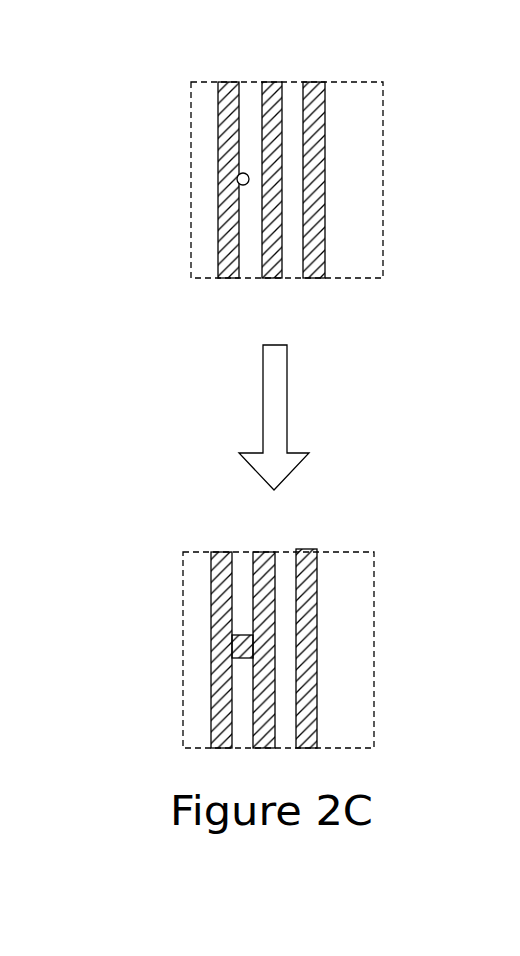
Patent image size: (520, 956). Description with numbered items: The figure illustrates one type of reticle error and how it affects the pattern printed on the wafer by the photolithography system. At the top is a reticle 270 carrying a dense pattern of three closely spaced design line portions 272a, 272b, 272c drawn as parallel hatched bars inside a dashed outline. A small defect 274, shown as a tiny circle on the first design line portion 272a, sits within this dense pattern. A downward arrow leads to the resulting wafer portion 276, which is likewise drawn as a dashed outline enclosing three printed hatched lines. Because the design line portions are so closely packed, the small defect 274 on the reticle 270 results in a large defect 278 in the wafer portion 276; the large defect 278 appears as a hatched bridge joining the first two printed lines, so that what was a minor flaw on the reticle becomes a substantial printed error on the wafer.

The reticle 270 is at (335, 82).
The design line portion 272a is at (218, 222).
The design line portion 272b is at (277, 110).
The design line portion 272c is at (325, 139).
The small defect 274 is at (240, 180).
The wafer portion 276 is at (350, 550).
The large defect 278 is at (220, 652).